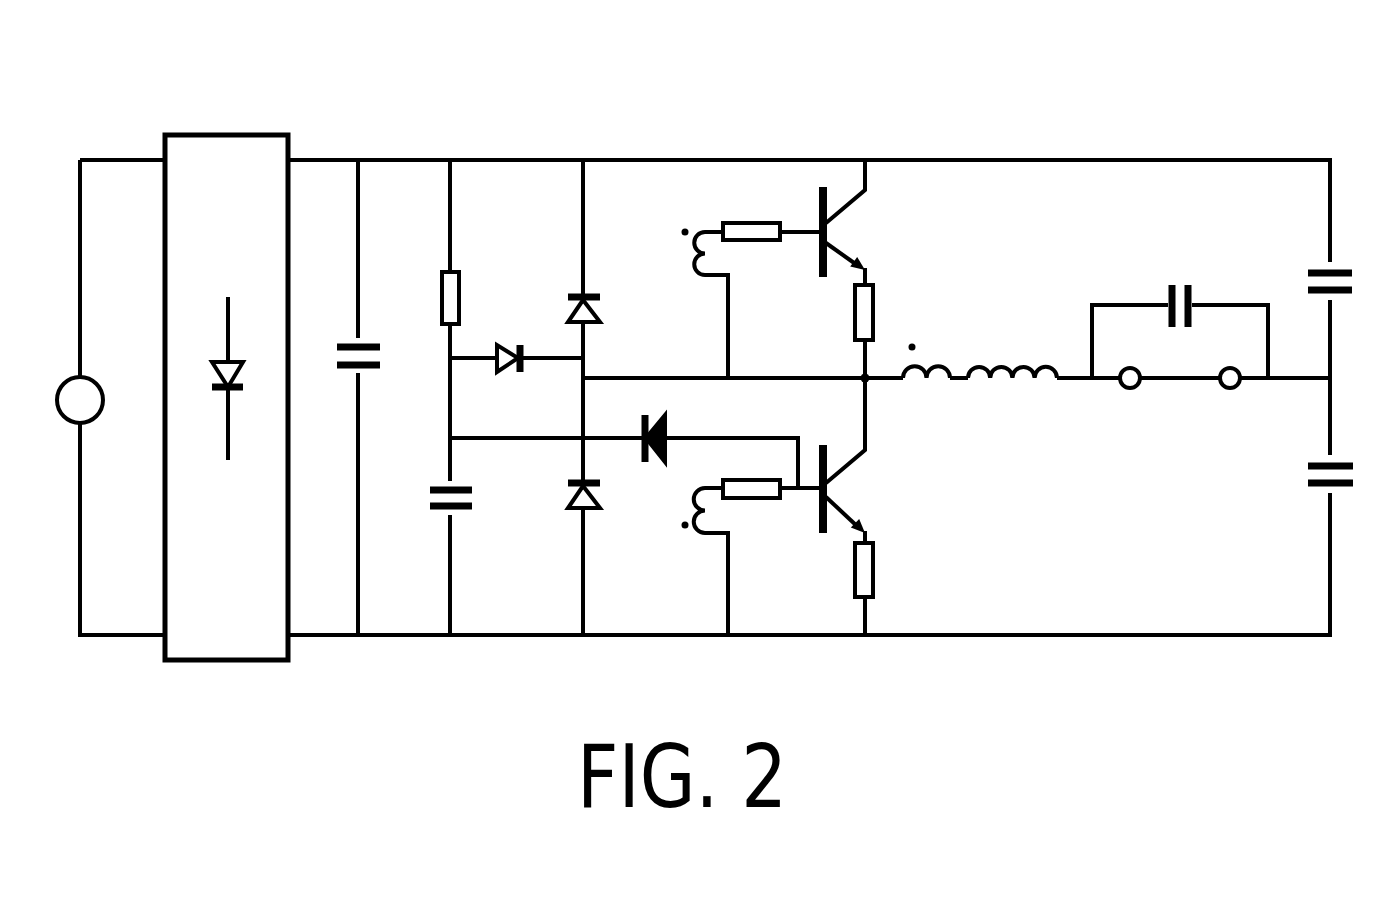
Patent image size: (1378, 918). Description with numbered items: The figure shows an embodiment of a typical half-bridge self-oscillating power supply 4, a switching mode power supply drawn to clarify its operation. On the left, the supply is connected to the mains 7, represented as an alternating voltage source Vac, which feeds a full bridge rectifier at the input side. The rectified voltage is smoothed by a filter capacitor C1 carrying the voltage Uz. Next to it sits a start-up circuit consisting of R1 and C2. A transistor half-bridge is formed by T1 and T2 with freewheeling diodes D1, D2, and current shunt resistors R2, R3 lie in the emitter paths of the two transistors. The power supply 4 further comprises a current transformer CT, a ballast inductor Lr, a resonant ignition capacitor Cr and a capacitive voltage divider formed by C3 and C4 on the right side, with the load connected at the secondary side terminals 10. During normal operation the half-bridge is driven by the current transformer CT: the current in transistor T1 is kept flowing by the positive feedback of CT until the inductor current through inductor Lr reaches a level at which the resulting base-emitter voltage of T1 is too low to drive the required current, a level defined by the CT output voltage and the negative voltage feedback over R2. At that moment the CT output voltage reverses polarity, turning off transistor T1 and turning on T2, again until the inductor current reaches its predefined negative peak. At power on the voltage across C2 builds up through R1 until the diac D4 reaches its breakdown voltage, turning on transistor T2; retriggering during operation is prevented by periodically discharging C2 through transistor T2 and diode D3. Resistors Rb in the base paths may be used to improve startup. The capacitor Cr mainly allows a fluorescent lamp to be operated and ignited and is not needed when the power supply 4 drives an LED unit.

The self-oscillating power supply 4 is at (1034, 122).
The mains 7 is at (92, 378).
The secondary side terminals 10 is at (1231, 388).
The AC input voltage Vac is at (118, 461).
The filter capacitor C1 is at (371, 382).
The start-up capacitor C2 is at (465, 523).
The voltage divider capacitor C3 is at (1316, 258).
The voltage divider capacitor C4 is at (1315, 499).
The start-up resistor R1 is at (472, 298).
The current shunt resistor R2 is at (887, 325).
The current shunt resistor R3 is at (887, 583).
The base resistors Rb is at (764, 358).
The freewheeling diode D1 is at (600, 286).
The freewheeling diode D2 is at (599, 519).
The diode D3 is at (516, 375).
The diac D4 is at (624, 438).
The transistor T1 is at (860, 218).
The transistor T2 is at (860, 455).
The current transformer CT is at (810, 432).
The ballast inductor Lr is at (980, 348).
The resonant ignition capacitor Cr is at (1180, 316).